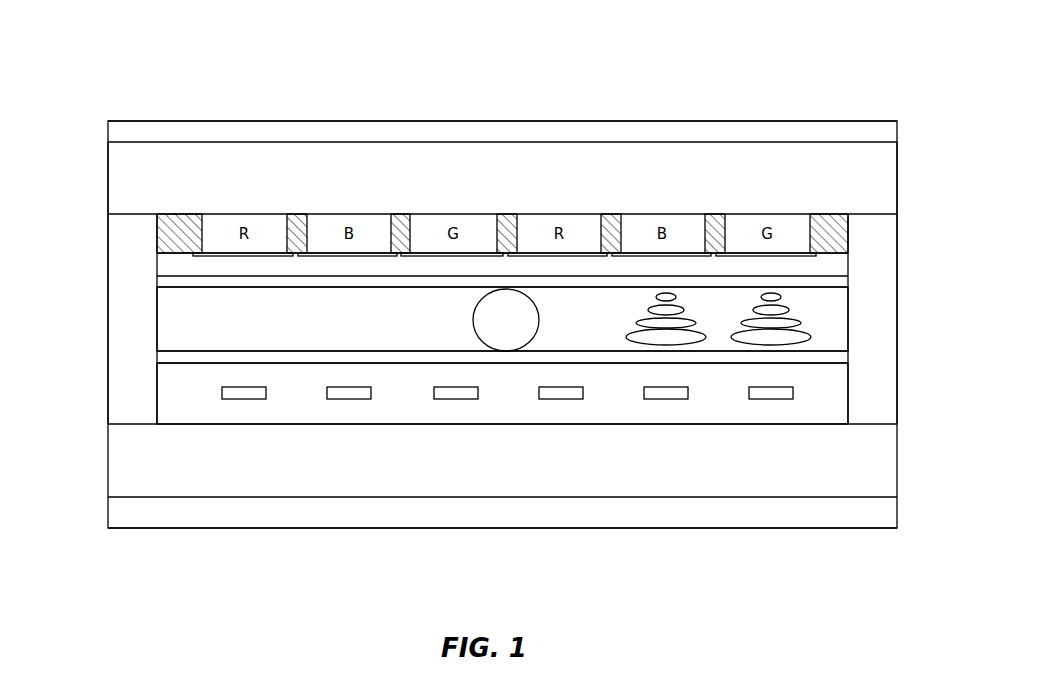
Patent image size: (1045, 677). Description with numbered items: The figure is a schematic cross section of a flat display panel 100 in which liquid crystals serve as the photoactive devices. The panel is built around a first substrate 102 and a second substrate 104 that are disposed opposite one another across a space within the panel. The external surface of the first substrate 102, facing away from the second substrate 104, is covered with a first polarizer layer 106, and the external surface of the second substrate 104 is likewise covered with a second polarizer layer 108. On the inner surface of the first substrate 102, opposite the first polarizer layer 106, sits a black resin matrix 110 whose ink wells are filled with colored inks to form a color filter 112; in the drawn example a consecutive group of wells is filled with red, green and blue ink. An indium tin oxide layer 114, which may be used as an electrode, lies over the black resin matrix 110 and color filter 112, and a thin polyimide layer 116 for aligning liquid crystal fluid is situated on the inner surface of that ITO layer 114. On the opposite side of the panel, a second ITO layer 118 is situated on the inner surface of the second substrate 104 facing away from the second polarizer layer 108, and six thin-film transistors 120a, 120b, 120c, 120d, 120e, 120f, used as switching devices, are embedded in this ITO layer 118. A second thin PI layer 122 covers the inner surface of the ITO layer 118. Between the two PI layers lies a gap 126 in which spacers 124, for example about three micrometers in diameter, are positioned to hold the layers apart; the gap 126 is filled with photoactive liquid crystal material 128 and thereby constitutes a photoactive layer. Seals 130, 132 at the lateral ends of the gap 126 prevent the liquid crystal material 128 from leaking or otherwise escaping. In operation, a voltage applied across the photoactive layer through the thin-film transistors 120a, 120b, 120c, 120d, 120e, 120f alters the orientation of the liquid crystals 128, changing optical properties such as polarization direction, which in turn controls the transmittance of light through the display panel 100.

The display panel 100 is at (268, 60).
The first substrate 102 is at (107, 172).
The second substrate 104 is at (898, 473).
The first polarizer layer 106 is at (317, 120).
The second polarizer layer 108 is at (590, 529).
The black resin matrix 110 is at (822, 213).
The color filter 112 is at (762, 213).
The ITO layer 114 is at (156, 264).
The PI layer 116 is at (239, 288).
The second ITO layer 118 is at (156, 412).
The thin-film transistor 120a is at (244, 393).
The thin-film transistor 120b is at (349, 393).
The thin-film transistor 120c is at (456, 393).
The thin-film transistor 120d is at (561, 393).
The thin-film transistor 120e is at (666, 393).
The thin-film transistor 120f is at (771, 393).
The second PI layer 122 is at (243, 350).
The spacer 124 is at (472, 330).
The gap 126 is at (327, 322).
The liquid crystal material 128 is at (627, 340).
The seal 130 is at (107, 350).
The seal 132 is at (898, 362).